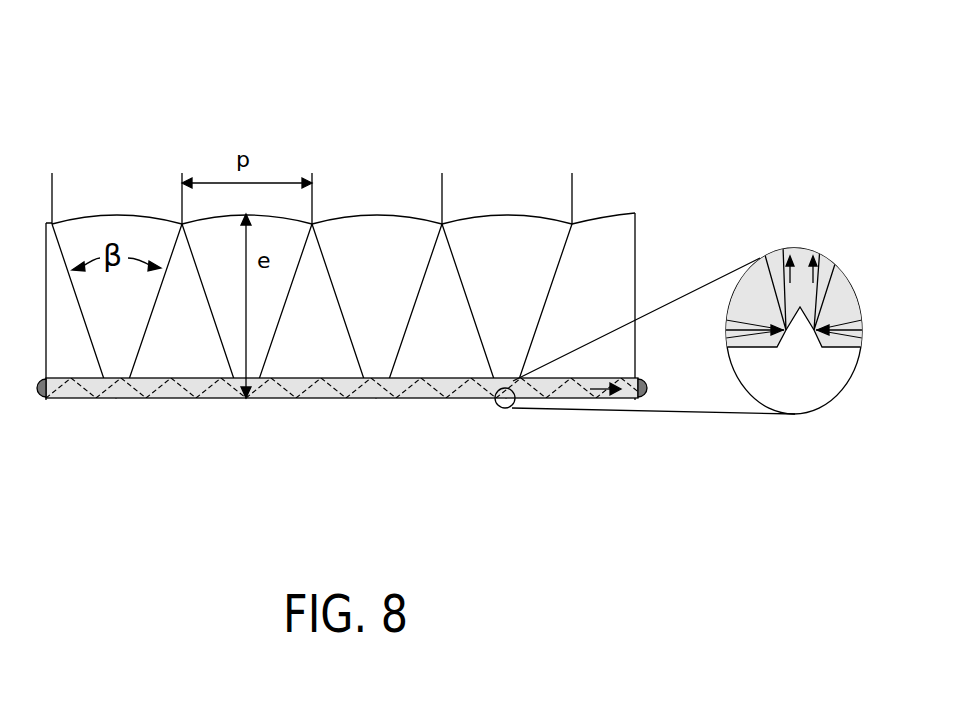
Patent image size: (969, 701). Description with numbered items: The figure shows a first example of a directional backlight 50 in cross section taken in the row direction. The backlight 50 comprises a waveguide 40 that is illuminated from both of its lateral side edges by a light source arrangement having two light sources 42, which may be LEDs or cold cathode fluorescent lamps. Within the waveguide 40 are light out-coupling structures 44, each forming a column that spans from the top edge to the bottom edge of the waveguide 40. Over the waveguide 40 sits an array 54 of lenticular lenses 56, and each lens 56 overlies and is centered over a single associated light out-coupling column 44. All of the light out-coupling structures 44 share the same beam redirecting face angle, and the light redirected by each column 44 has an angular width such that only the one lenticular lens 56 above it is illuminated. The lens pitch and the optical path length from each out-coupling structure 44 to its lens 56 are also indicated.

The waveguide 40 is at (186, 422).
The light sources 42 is at (39, 395).
The light out-coupling structures 44 is at (245, 395).
The backlight 50 is at (114, 136).
The array of lenticular lenses 54 is at (610, 160).
The lenticular lens 56 is at (374, 210).